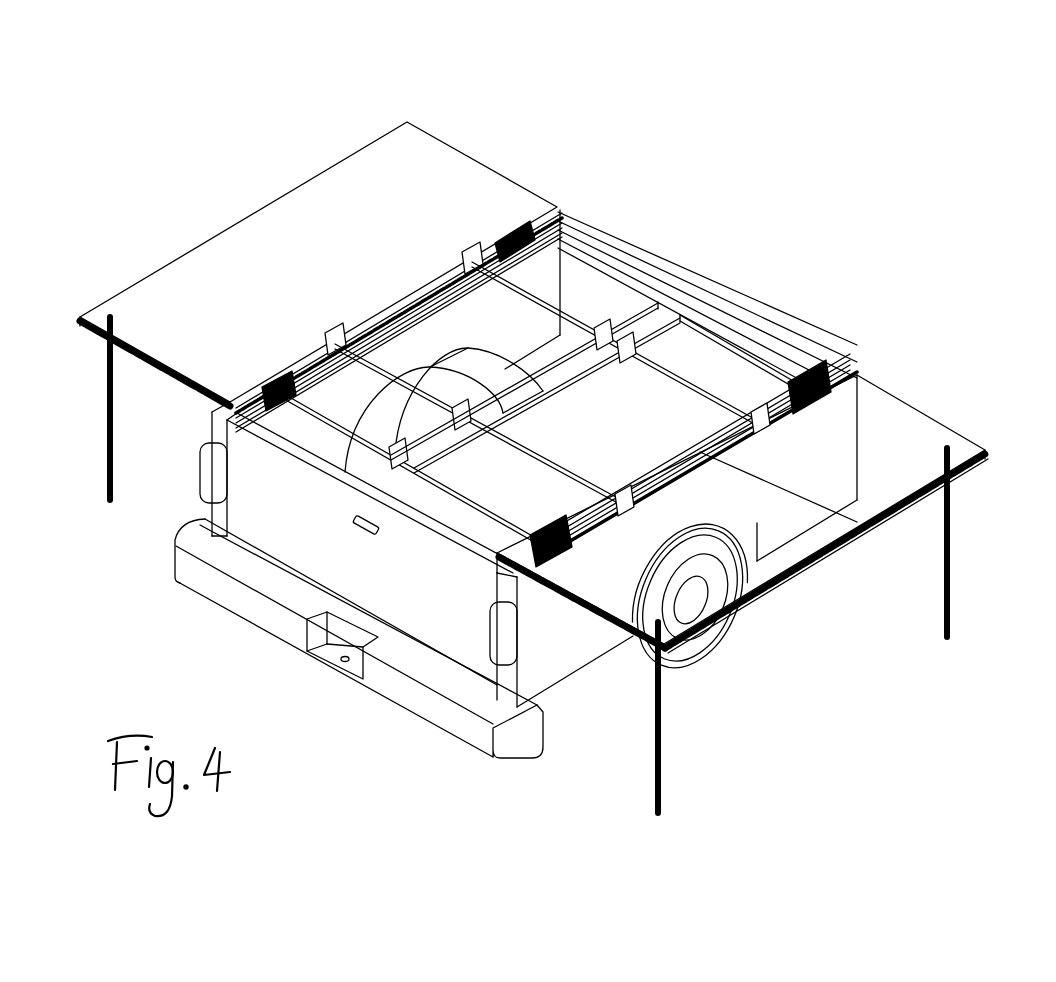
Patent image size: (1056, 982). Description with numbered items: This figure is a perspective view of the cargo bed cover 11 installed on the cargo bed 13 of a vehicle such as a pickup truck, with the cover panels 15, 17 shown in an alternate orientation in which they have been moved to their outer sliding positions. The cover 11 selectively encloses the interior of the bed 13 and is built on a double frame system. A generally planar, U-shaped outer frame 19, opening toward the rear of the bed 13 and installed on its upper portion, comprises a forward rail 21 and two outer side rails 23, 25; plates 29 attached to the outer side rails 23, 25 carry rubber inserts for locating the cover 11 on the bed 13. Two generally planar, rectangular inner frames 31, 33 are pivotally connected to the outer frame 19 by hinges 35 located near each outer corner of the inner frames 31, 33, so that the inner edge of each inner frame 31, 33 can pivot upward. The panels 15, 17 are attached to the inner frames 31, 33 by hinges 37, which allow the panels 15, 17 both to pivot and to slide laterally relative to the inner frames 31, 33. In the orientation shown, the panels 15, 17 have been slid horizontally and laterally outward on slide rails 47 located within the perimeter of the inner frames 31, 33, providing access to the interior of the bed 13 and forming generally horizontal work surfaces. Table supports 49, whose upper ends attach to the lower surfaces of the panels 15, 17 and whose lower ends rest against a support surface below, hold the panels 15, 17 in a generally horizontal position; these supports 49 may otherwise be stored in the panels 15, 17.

The cargo bed cover 11 is at (875, 200).
The cargo bed 13 is at (860, 437).
The cover panel 15 is at (285, 238).
The cover panel 17 is at (758, 527).
The outer frame 19 is at (585, 225).
The forward rail 21 is at (613, 254).
The outer side rail 23 is at (425, 290).
The outer side rail 25 is at (826, 553).
The plate 29 is at (858, 373).
The inner frame 31 is at (733, 343).
The inner frame 33 is at (313, 421).
The hinge 35 is at (814, 404).
The hinge 37 is at (600, 328).
The slide rail 47 is at (630, 340).
The table support 49 is at (663, 718).